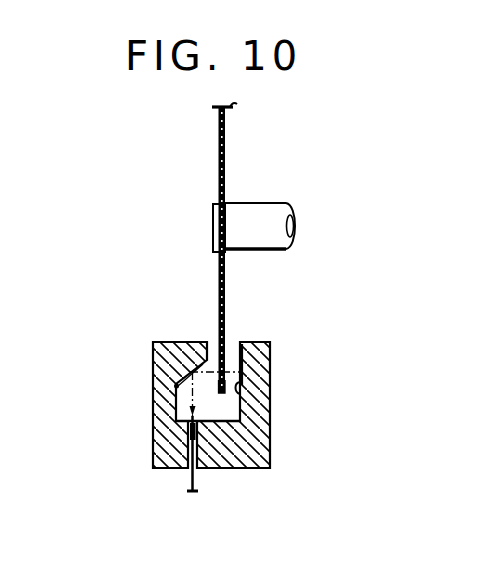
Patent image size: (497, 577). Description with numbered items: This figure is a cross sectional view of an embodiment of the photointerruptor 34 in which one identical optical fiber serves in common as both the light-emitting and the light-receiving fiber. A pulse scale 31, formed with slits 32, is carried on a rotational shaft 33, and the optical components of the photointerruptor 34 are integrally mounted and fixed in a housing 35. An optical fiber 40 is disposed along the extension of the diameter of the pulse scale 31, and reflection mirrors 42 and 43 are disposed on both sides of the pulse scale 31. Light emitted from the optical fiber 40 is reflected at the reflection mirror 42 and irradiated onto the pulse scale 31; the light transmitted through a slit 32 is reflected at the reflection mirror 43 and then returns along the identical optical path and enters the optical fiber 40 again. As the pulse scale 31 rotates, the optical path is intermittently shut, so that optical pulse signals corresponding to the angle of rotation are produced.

The pulse scale 31 is at (212, 160).
The slit 32 is at (226, 365).
The rotational shaft 33 is at (256, 203).
The photointerruptor 34 is at (203, 418).
The housing 35 is at (255, 448).
The optical fiber 40 is at (188, 486).
The reflection mirror 42 is at (177, 403).
The reflection mirror 43 is at (250, 405).